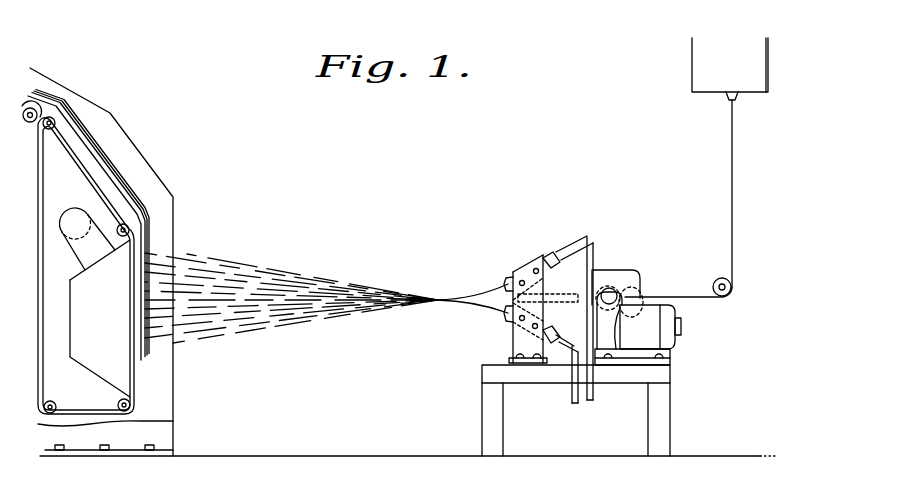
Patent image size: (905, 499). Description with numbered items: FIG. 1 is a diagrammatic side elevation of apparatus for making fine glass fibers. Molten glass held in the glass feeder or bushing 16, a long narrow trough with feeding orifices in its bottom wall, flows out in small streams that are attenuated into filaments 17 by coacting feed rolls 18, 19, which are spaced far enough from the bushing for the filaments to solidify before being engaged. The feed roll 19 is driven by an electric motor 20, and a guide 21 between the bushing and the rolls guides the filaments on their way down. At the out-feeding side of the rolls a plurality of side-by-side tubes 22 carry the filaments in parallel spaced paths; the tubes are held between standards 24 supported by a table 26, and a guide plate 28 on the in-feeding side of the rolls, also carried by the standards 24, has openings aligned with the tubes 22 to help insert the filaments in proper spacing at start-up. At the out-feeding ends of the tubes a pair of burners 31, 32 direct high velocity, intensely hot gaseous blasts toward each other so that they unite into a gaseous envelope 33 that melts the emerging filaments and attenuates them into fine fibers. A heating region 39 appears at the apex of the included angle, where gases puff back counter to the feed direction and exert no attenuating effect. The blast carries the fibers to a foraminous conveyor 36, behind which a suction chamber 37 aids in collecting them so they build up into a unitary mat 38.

The glass feeder or bushing 16 is at (728, 100).
The filaments 17 is at (730, 175).
The feed roll 18 is at (609, 286).
The feed roll 19 is at (638, 306).
The electric motor 20 is at (676, 340).
The guide 21 is at (717, 278).
The tubes 22 is at (553, 293).
The standards 24 is at (626, 276).
The table 26 is at (665, 375).
The guide plate 28 is at (641, 290).
The burner 31 is at (552, 256).
The burner 32 is at (510, 321).
The gaseous envelope 33 is at (488, 294).
The foraminous conveyor 36 is at (133, 380).
The suction chamber 37 is at (98, 367).
The mat 38 is at (122, 197).
The heating region 39 is at (506, 306).